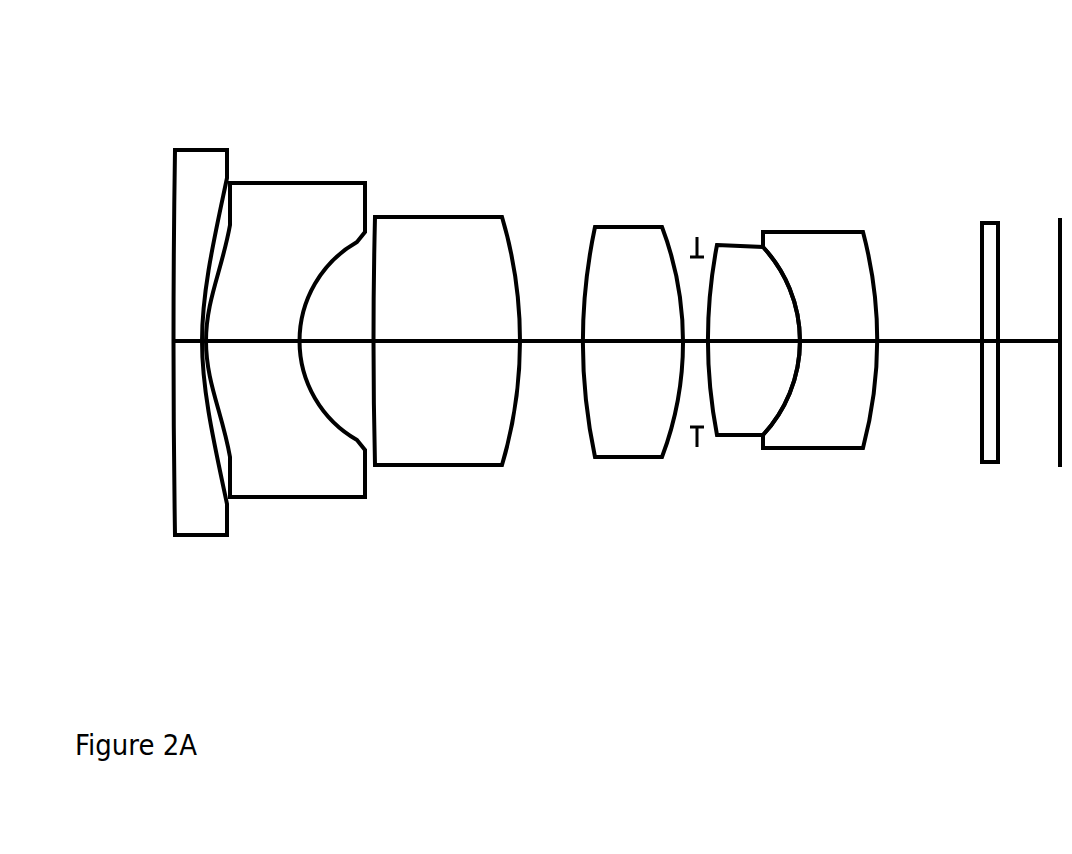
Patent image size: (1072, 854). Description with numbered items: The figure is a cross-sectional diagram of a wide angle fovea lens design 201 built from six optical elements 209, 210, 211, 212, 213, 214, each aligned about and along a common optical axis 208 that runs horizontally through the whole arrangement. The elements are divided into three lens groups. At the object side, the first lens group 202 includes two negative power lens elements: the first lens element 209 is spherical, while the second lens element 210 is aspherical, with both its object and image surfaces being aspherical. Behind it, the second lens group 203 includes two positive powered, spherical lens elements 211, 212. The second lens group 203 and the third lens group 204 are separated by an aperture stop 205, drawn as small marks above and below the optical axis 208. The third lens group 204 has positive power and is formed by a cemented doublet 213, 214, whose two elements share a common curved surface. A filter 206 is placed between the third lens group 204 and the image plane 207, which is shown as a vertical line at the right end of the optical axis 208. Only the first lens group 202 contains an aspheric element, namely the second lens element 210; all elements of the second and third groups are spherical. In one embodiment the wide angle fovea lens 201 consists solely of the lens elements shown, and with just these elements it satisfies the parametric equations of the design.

The wide angle fovea lens design 201 is at (547, 624).
The first lens group 202 is at (353, 118).
The second lens group 203 is at (650, 150).
The third lens group 204 is at (705, 153).
The aperture stop 205 is at (702, 455).
The filter 206 is at (988, 220).
The image plane 207 is at (1058, 216).
The optical axis 208 is at (922, 345).
The first lens element 209 is at (190, 502).
The second lens element 210 is at (295, 467).
The lens element 211 is at (450, 400).
The lens element 212 is at (613, 407).
The cemented doublet element 213 is at (748, 392).
The cemented doublet element 214 is at (827, 395).